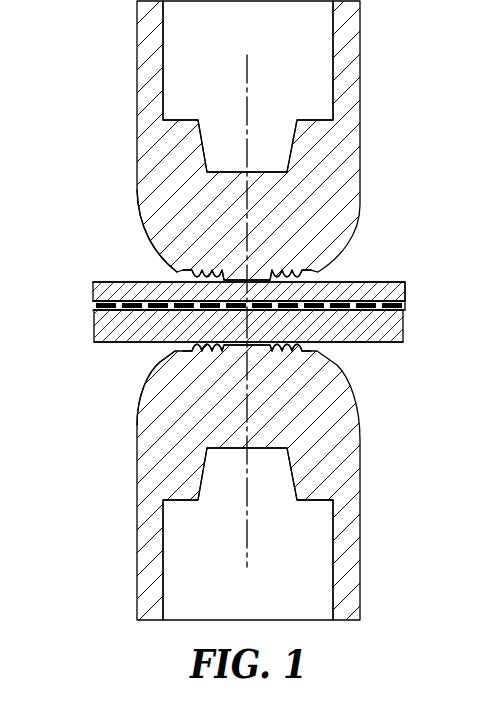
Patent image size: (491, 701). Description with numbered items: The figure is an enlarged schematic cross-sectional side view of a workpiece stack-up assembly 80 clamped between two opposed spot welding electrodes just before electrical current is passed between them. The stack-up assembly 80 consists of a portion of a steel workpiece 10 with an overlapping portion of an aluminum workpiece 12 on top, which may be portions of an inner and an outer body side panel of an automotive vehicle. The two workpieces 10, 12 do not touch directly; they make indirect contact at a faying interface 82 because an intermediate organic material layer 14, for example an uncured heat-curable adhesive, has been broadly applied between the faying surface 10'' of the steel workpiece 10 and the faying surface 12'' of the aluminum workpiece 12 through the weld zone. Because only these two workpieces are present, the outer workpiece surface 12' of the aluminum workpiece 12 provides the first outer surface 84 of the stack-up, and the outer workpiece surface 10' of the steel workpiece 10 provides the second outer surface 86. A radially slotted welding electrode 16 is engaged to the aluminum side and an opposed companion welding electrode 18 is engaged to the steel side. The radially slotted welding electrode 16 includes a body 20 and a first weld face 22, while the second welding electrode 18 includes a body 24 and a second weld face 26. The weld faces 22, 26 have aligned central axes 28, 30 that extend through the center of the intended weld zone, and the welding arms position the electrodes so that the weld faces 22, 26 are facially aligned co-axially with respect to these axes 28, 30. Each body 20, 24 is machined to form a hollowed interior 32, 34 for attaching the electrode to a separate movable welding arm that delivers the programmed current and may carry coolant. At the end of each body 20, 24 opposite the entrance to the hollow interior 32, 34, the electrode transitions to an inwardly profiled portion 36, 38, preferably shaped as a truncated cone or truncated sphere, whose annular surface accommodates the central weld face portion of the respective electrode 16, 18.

The steel workpiece 10 is at (252, 357).
The outer workpiece surface of the steel workpiece 10' is at (282, 336).
The faying surface of the steel workpiece 10'' is at (268, 340).
The aluminum workpiece 12 is at (257, 254).
The outer workpiece surface of the aluminum workpiece 12' is at (269, 232).
The faying surface of the aluminum workpiece 12'' is at (279, 313).
The intermediate organic material layer 14 is at (253, 301).
The radially slotted welding electrode 16 is at (200, 155).
The companion welding electrode 18 is at (200, 465).
The body of the radially slotted welding electrode 20 is at (148, 150).
The first weld face 22 is at (238, 286).
The body of the second welding electrode 24 is at (150, 470).
The second weld face 26 is at (240, 334).
The central axis of the first weld face 28 is at (248, 92).
The central axis of the second weld face 30 is at (248, 527).
The hollowed interior of the first electrode 32 is at (228, 54).
The hollowed interior of the second electrode 34 is at (228, 566).
The inwardly profiled portion of the first electrode 36 is at (152, 259).
The inwardly profiled portion of the second electrode 38 is at (160, 372).
The workpiece stack-up assembly 80 is at (408, 282).
The faying interface 82 is at (407, 305).
The first outer surface 84 is at (357, 282).
The second outer surface 86 is at (346, 343).